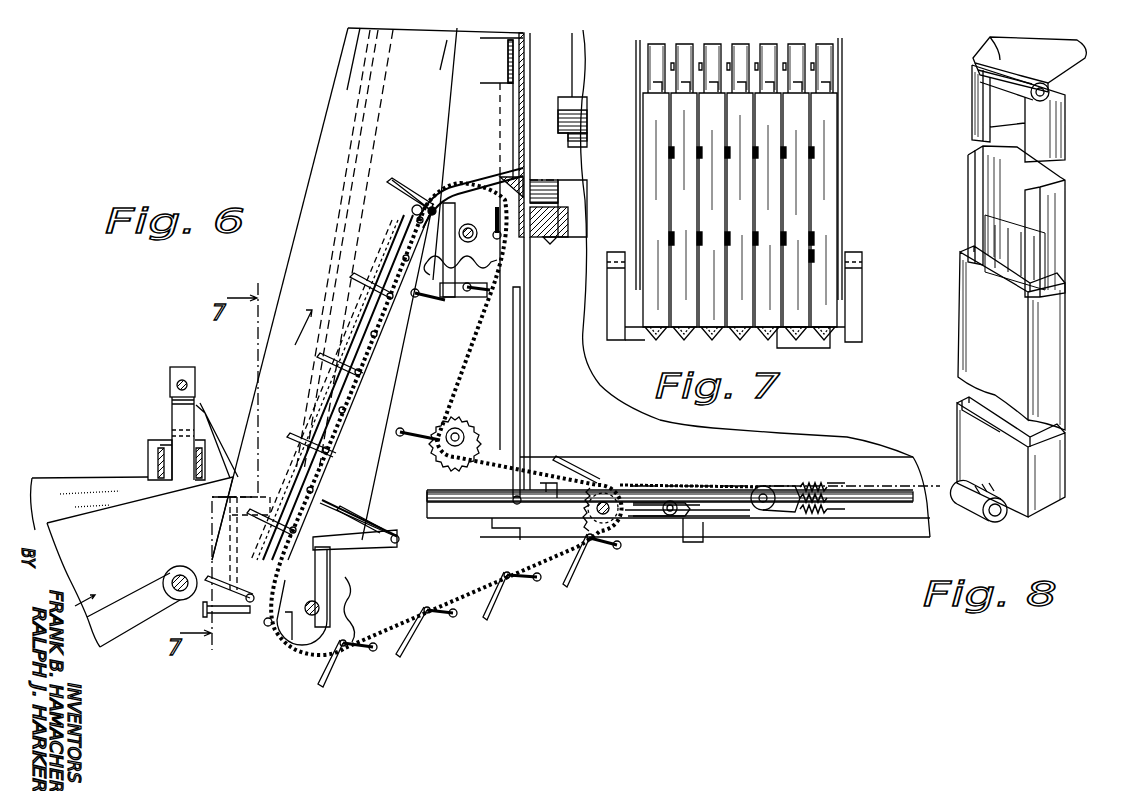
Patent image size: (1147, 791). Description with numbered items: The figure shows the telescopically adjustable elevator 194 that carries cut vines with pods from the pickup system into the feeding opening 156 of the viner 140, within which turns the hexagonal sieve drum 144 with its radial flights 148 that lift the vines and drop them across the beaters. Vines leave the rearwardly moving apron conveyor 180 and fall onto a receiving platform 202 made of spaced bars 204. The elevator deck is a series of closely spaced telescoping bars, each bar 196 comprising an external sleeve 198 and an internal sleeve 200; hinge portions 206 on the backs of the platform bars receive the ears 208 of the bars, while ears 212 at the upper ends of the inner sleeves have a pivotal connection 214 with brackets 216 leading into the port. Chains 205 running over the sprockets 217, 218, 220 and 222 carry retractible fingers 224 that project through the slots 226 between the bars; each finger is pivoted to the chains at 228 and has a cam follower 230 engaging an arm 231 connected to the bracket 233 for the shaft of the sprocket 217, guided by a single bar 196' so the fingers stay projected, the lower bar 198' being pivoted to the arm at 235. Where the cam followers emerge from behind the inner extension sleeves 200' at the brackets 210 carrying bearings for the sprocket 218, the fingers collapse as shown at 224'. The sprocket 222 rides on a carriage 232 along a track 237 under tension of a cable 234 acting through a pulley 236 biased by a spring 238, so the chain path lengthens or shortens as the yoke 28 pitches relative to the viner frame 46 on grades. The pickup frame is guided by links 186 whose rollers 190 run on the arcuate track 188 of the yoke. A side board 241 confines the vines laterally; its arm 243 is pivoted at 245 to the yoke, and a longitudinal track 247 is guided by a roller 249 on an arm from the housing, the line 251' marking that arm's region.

In FIG. 6, the yoke 28 is at (67, 488).
In FIG. 6, the viner frame 46 is at (622, 467).
In FIG. 6, the viner 140 is at (562, 402).
In FIG. 6, the drum 144 is at (573, 240).
In FIG. 6, the radial flights 148 is at (577, 253).
In FIG. 6, the feeding opening 156 is at (517, 115).
In FIG. 6, the apron conveyor 180 is at (132, 583).
In FIG. 6, the links 186 is at (148, 463).
In FIG. 6, the arcuate track 188 is at (172, 400).
In FIG. 6, the rollers 190 is at (172, 419).
In FIG. 6, the elevator 194 is at (302, 401).
In FIG. 6, the bar 196 is at (345, 387).
In FIG. 7, the bar 196 is at (765, 210).
In FIG. 8, the bar 196 is at (1037, 338).
In FIG. 6, the single bar 196' is at (373, 519).
In FIG. 6, the external sleeve 198 is at (321, 390).
In FIG. 7, the external sleeve 198 is at (855, 240).
In FIG. 8, the external sleeve 198 is at (986, 430).
In FIG. 6, the lower bar 198' is at (360, 566).
In FIG. 6, the internal sleeve 200 is at (446, 419).
In FIG. 7, the internal sleeve 200 is at (771, 68).
In FIG. 8, the internal sleeve 200 is at (1044, 221).
In FIG. 6, the inner extension sleeves 200' is at (411, 364).
In FIG. 6, the receiving platform 202 is at (243, 663).
In FIG. 7, the receiving platform 202 is at (787, 350).
In FIG. 7, the spaced bars 204 is at (733, 330).
In FIG. 6, the chains 205 is at (393, 627).
In FIG. 6, the hinge portions 206 is at (267, 615).
In FIG. 6, the ears 208 is at (280, 623).
In FIG. 8, the ears 208 is at (983, 522).
In FIG. 6, the brackets 210 is at (457, 250).
In FIG. 8, the ears 212 is at (1025, 93).
In FIG. 6, the pivotal connection 214 is at (412, 211).
In FIG. 8, the pivotal connection 214 is at (1049, 90).
In FIG. 6, the brackets 216 is at (443, 177).
In FIG. 8, the brackets 216 is at (1067, 74).
In FIG. 6, the sprocket 217 is at (357, 588).
In FIG. 6, the sprocket 218 is at (424, 371).
In FIG. 6, the sprocket 220 is at (463, 427).
In FIG. 6, the sprocket 222 is at (623, 483).
In FIG. 6, the retractible fingers 224 is at (413, 420).
In FIG. 7, the retractible fingers 224 is at (782, 154).
In FIG. 6, the collapsed fingers 224' is at (479, 216).
In FIG. 6, the slots 226 is at (337, 392).
In FIG. 7, the slots 226 is at (697, 178).
In FIG. 6, the finger pivot 228 is at (500, 580).
In FIG. 6, the cam follower 230 is at (350, 708).
In FIG. 6, the arm 231 is at (287, 613).
In FIG. 6, the carriage 232 is at (643, 517).
In FIG. 6, the bracket 233 is at (297, 557).
In FIG. 6, the cable 234 is at (733, 473).
In FIG. 6, the pivot 235 is at (303, 640).
In FIG. 6, the pulley 236 is at (767, 513).
In FIG. 6, the track 237 is at (447, 503).
In FIG. 6, the spring 238 is at (830, 513).
In FIG. 6, the side board 241 is at (333, 153).
In FIG. 7, the side board 241 is at (637, 67).
In FIG. 6, the arm 243 is at (400, 538).
In FIG. 6, the pivot 245 is at (400, 540).
In FIG. 6, the track 247 is at (370, 66).
In FIG. 6, the roller 249 is at (377, 43).
In FIG. 6, the line 251' is at (426, 67).